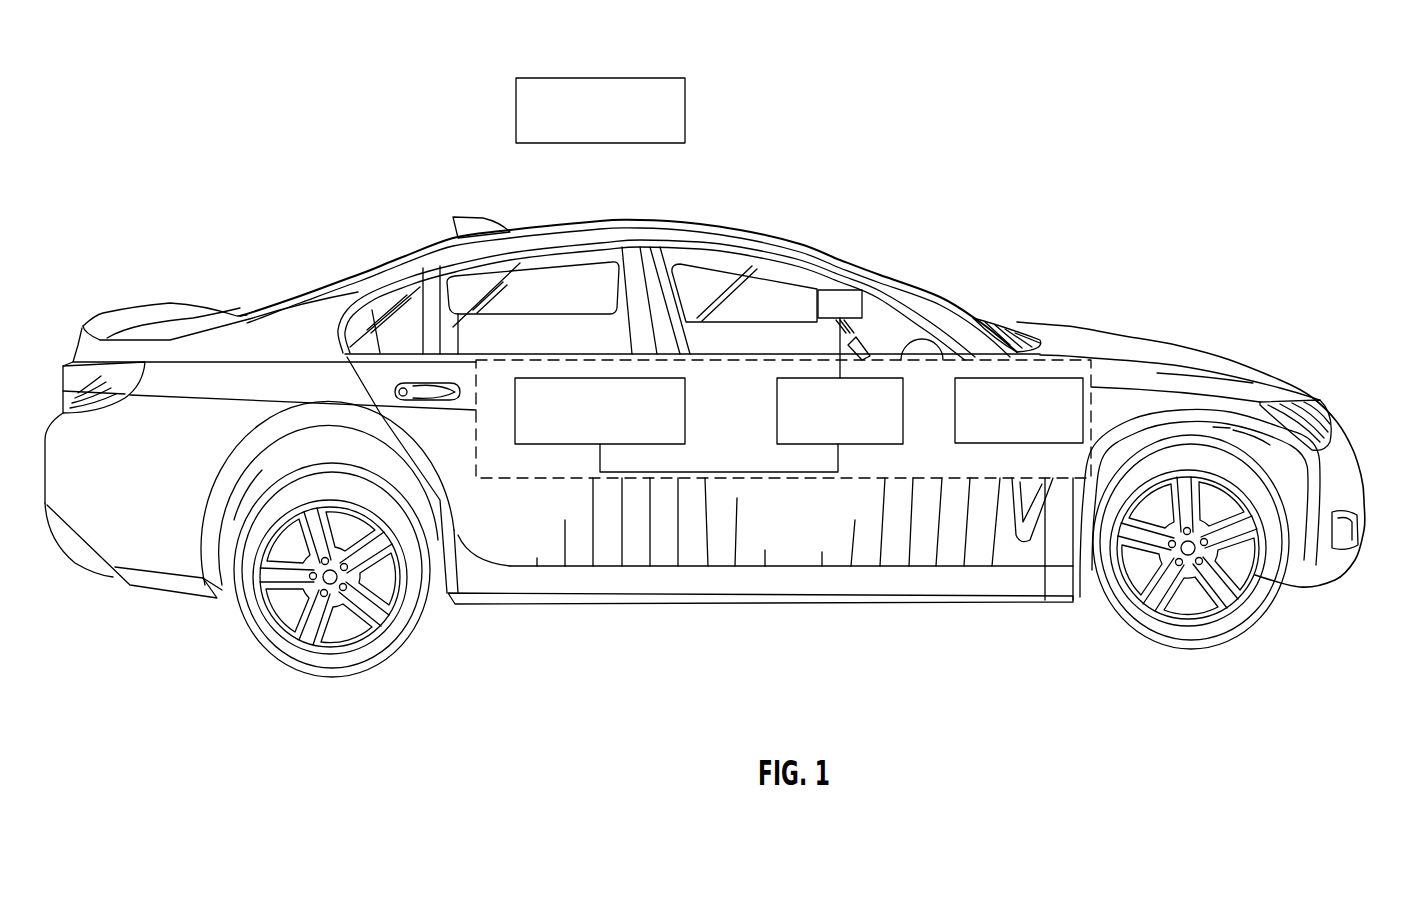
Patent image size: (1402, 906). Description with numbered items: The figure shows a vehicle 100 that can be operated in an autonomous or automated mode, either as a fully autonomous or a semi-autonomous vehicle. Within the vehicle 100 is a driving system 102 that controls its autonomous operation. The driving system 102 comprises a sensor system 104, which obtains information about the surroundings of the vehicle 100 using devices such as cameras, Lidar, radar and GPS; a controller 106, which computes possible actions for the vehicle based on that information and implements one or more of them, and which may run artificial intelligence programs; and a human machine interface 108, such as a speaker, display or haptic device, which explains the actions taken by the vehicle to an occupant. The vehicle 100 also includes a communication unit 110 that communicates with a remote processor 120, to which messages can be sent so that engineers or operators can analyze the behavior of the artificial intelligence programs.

The vehicle 100 is at (1170, 65).
The driving system 102 is at (620, 347).
The sensor system 104 is at (1033, 378).
The controller 106 is at (797, 378).
The human machine interface 108 is at (538, 378).
The communication unit 110 is at (843, 290).
The remote processor 120 is at (685, 110).